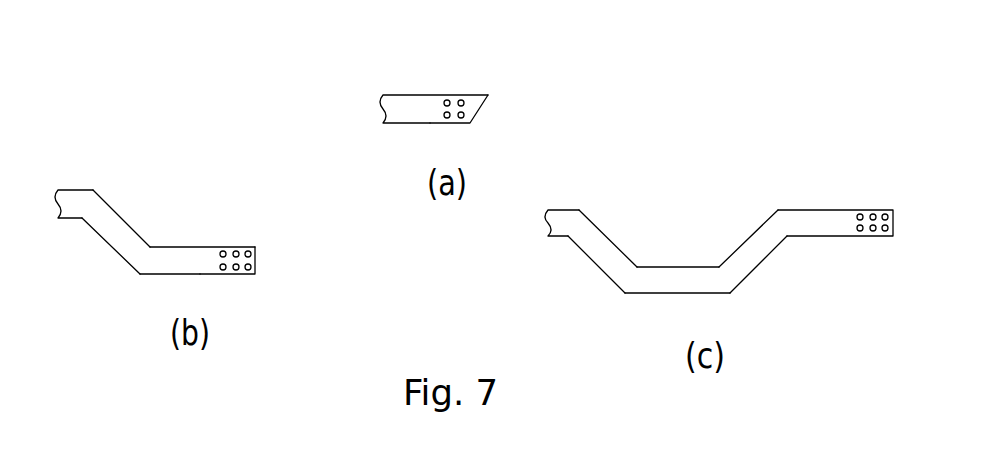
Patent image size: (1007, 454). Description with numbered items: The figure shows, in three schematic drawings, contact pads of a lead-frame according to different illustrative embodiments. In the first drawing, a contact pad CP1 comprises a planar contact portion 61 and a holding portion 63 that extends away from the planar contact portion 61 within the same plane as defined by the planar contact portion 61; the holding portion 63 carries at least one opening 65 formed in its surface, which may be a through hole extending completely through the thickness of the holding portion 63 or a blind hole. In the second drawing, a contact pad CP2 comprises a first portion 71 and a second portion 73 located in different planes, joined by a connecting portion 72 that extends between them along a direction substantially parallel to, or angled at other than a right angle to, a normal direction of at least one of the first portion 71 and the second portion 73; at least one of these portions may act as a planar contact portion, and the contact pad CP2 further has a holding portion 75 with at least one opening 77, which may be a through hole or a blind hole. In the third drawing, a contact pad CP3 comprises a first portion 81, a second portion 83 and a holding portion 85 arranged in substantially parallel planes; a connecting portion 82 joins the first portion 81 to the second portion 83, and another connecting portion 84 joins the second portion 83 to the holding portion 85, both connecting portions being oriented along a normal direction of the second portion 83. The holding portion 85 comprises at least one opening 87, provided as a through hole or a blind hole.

The contact pad CP1 is at (462, 77).
The planar contact portion 61 is at (413, 100).
The holding portion 63 is at (465, 128).
The opening 65 is at (463, 106).
The contact pad CP2 is at (183, 219).
The first portion 71 is at (75, 192).
The connecting portion 72 is at (110, 238).
The second portion 73 is at (180, 252).
The holding portion 75 is at (247, 282).
The opening 77 is at (238, 252).
The contact pad CP3 is at (745, 216).
The first portion 81 is at (561, 212).
The connecting portion 82 is at (595, 256).
The second portion 83 is at (673, 270).
The connecting portion 84 is at (760, 256).
The holding portion 85 is at (886, 240).
The opening 87 is at (878, 213).